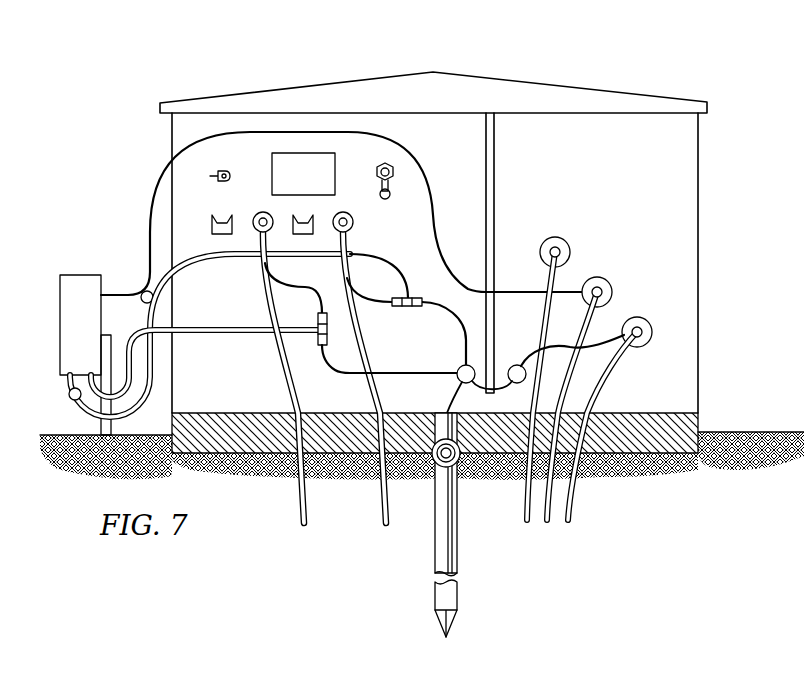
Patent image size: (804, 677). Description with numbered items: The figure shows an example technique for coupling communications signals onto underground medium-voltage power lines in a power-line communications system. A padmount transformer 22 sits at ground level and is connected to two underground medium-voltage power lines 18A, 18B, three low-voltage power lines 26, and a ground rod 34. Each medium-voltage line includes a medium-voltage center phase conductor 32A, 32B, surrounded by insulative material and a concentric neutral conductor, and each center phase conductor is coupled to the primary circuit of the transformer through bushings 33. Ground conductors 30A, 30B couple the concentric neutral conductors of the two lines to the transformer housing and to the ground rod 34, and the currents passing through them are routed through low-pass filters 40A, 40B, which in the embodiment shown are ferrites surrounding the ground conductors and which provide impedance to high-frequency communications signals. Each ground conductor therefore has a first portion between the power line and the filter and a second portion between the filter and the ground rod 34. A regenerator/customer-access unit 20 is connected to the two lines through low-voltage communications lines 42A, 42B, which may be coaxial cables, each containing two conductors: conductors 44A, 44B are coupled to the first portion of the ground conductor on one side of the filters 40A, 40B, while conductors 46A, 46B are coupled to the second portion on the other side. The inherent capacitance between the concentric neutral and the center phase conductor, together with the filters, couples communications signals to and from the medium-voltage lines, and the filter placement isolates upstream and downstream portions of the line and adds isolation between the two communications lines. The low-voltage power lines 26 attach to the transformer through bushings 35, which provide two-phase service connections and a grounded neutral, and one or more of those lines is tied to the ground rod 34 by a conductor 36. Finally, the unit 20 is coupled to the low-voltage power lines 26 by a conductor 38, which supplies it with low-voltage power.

The padmount transformer 22 is at (569, 88).
The conductor 38 is at (158, 190).
The regenerator/customer-access unit 20 is at (70, 275).
The low-voltage communications line 42B is at (147, 291).
The low-voltage communications line 42A is at (70, 396).
The medium-voltage center phase conductor 32A is at (255, 226).
The bushings 33 is at (261, 212).
The ground conductor 30B is at (368, 258).
The ground conductor 30A is at (270, 284).
The medium-voltage center phase conductor 32B is at (318, 316).
The conductor 44A is at (278, 362).
The conductor 46A is at (318, 346).
The conductor 44B is at (436, 228).
The conductor 46B is at (414, 300).
The low-pass filter 40B is at (400, 306).
The low-pass filter 40A is at (328, 330).
The bushings 35 is at (556, 236).
The conductor 36 is at (610, 343).
The low-voltage power lines 26 is at (522, 507).
The ground rod 34 is at (457, 545).
The underground medium-voltage power line 18A is at (297, 510).
The underground medium-voltage power line 18B is at (380, 510).